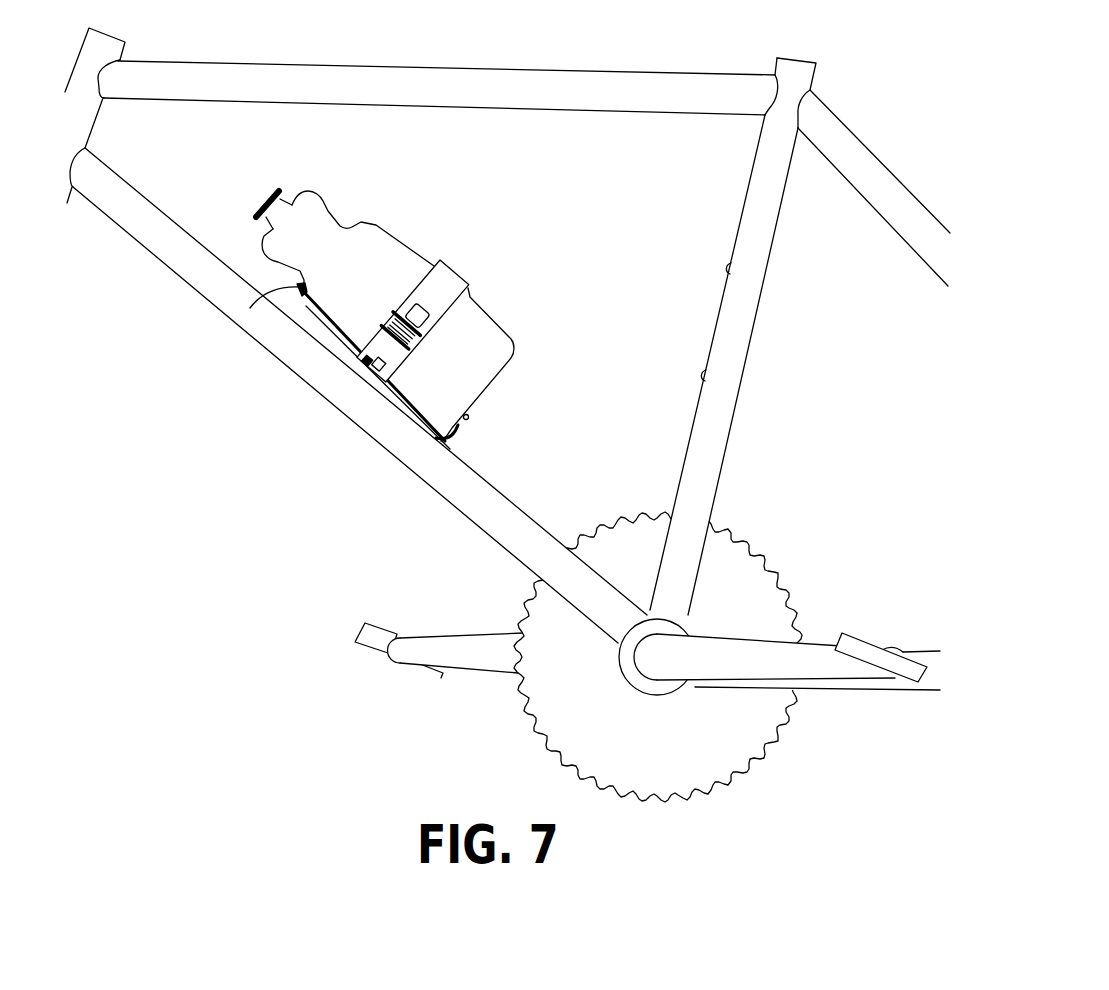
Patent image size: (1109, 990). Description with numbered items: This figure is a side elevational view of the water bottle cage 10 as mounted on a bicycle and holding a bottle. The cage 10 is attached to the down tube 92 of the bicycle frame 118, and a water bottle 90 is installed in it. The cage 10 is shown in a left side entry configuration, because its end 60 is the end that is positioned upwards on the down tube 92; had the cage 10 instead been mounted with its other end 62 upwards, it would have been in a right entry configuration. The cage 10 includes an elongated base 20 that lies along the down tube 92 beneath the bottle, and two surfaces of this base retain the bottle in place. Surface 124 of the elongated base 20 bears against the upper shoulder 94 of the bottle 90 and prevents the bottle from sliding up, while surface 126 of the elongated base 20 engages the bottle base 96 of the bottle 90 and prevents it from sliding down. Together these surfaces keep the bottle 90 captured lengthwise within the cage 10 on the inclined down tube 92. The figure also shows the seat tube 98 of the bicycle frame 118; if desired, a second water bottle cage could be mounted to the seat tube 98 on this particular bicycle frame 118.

The bicycle frame 118 is at (507, 406).
The upper shoulder 94 is at (339, 225).
The water bottle 90 is at (411, 305).
The cage 10 is at (456, 273).
The down tube 92 is at (190, 262).
The end 60 is at (275, 293).
The surface 124 is at (300, 290).
The elongated base 20 is at (396, 393).
The end 62 is at (467, 438).
The surface 126 is at (470, 417).
The bottle base 96 is at (505, 378).
The seat tube 98 is at (746, 330).